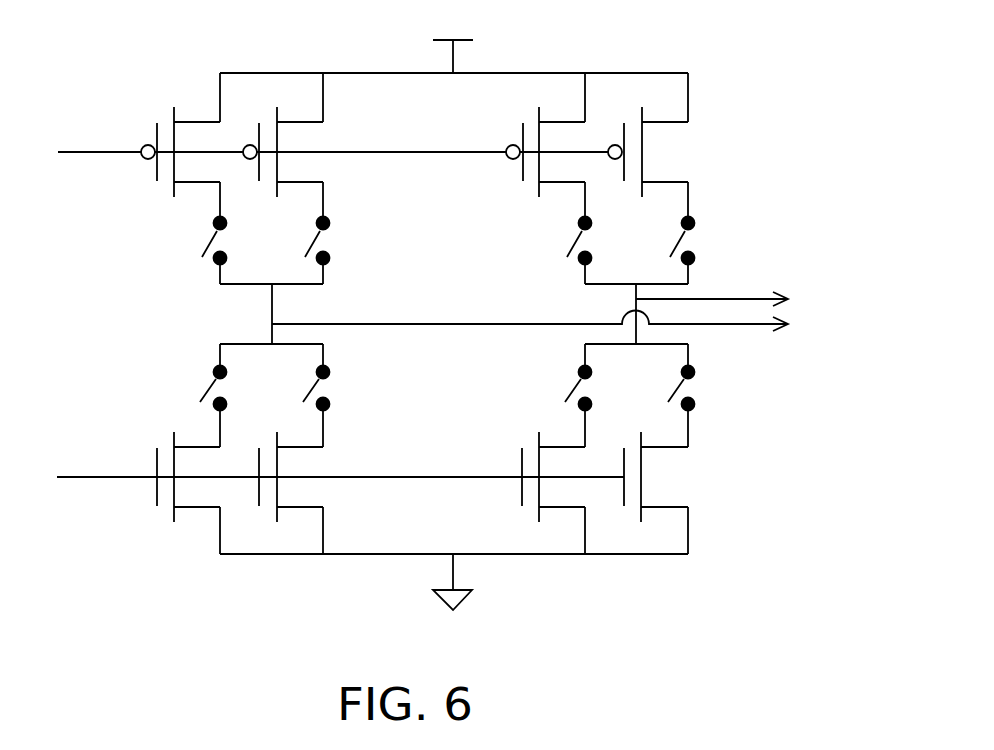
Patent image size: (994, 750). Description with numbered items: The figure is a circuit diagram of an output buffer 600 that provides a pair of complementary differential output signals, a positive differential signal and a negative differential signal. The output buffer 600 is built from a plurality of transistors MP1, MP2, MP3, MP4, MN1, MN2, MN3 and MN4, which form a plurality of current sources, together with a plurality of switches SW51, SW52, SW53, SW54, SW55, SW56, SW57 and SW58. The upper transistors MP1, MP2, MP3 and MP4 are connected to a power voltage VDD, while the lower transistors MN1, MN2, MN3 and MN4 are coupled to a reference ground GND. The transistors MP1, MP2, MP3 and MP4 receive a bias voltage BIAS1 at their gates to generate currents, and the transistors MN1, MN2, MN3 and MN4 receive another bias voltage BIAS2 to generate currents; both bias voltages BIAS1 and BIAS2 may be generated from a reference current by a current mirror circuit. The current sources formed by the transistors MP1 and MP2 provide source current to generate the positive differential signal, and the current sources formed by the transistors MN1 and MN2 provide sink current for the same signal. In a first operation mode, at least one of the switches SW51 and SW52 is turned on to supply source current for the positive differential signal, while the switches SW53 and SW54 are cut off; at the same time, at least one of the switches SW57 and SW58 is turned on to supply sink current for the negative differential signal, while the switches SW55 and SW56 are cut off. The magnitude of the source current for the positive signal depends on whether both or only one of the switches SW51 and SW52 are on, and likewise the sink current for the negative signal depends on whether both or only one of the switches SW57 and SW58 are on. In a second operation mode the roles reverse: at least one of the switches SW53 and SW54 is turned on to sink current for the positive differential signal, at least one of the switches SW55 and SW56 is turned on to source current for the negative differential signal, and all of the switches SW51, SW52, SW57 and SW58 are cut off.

The output buffer 600 is at (772, 605).
The transistor MP1 is at (180, 135).
The transistor MP2 is at (311, 152).
The transistor MP3 is at (545, 136).
The transistor MP4 is at (671, 152).
The transistor MN1 is at (185, 494).
The transistor MN2 is at (318, 477).
The transistor MN3 is at (553, 493).
The transistor MN4 is at (683, 477).
The switch SW51 is at (182, 233).
The switch SW52 is at (349, 233).
The switch SW53 is at (181, 395).
The switch SW54 is at (350, 395).
The switch SW55 is at (549, 233).
The switch SW56 is at (713, 233).
The switch SW57 is at (550, 395).
The switch SW58 is at (714, 395).
The bias voltage BIAS1 is at (330, 131).
The bias voltage BIAS2 is at (335, 459).
The power voltage VDD is at (454, 64).
The reference ground GND is at (454, 578).